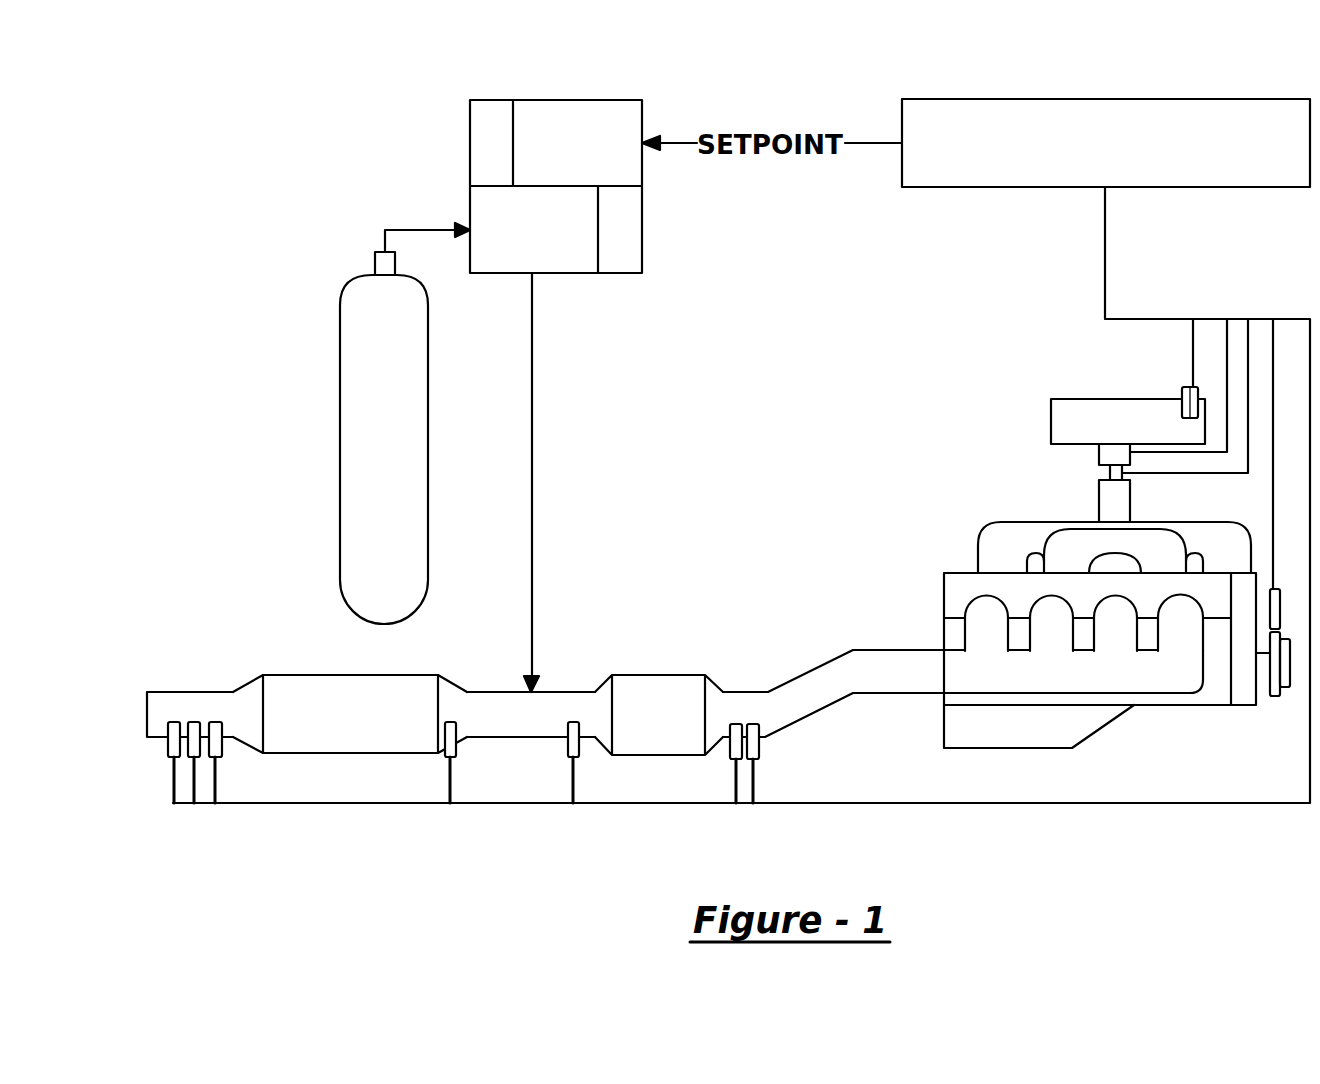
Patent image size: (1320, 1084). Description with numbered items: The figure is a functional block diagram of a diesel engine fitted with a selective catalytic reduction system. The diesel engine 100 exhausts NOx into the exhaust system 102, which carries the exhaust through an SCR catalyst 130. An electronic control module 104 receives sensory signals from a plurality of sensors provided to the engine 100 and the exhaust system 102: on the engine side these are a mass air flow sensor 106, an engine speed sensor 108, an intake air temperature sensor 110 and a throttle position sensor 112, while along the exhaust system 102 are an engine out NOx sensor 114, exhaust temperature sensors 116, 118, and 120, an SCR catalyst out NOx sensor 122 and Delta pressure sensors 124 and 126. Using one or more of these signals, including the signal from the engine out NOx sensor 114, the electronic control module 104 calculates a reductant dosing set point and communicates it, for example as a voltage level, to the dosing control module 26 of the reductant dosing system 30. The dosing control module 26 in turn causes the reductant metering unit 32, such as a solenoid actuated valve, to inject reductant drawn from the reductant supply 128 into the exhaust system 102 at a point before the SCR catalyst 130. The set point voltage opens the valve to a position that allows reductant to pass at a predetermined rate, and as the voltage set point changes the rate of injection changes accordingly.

The dosing control module 26 is at (513, 140).
The reductant dosing system 30 is at (483, 99).
The reductant metering unit 32 is at (598, 232).
The diesel engine 100 is at (898, 538).
The exhaust system 102 is at (753, 537).
The electronic control module 104 is at (987, 187).
The mass air flow sensor 106 is at (1182, 392).
The engine speed sensor 108 is at (1275, 588).
The intake air temperature sensor 110 is at (1099, 452).
The throttle position sensor 112 is at (1108, 470).
The engine out NOx sensor 114 is at (761, 738).
The exhaust temperature sensor 116 is at (728, 748).
The exhaust temperature sensor 118 is at (564, 753).
The exhaust temperature sensor 120 is at (196, 722).
The SCR catalyst out NOx sensor 122 is at (164, 739).
The Delta pressure sensor 124 is at (444, 755).
The Delta pressure sensor 126 is at (223, 739).
The reductant supply 128 is at (343, 298).
The SCR catalyst 130 is at (343, 675).